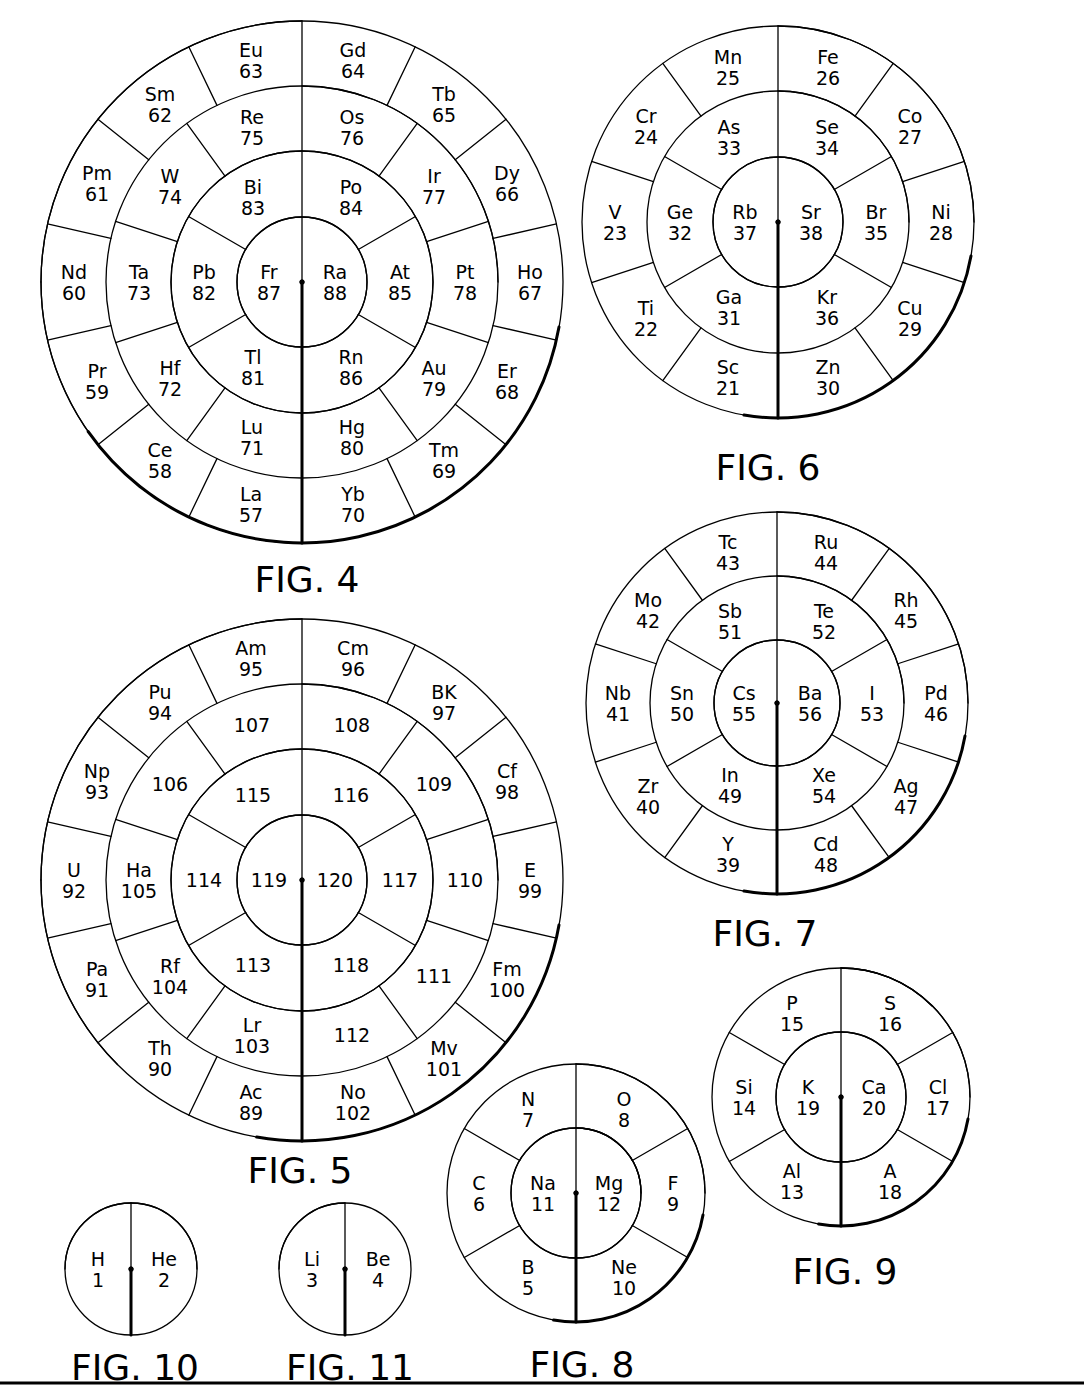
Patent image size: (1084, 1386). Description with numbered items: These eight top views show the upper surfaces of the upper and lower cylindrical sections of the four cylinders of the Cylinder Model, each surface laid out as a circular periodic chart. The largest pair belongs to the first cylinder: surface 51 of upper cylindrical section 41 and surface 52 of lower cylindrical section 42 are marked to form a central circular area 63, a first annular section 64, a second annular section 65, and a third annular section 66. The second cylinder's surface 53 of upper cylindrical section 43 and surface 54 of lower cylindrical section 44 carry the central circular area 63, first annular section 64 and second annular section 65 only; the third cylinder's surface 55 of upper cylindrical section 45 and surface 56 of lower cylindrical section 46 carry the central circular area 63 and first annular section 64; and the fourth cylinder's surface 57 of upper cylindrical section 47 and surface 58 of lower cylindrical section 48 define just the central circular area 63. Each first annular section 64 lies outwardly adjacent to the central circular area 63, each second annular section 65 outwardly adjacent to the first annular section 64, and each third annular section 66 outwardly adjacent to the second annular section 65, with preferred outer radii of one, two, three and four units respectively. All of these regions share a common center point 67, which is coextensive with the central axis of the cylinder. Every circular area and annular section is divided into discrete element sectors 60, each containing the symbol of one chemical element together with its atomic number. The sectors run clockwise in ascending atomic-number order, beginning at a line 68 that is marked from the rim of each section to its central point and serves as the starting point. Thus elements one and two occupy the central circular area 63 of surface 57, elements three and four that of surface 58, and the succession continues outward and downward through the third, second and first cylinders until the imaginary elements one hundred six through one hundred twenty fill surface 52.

In FIG. 4, the upper cylindrical section 41 is at (493, 412).
In FIG. 5, the upper cylindrical section 41 is at (383, 1132).
In FIG. 4, the lower cylindrical section 42 is at (400, 530).
In FIG. 5, the lower cylindrical section 42 is at (574, 870).
In FIG. 6, the upper cylindrical section 43 is at (934, 107).
In FIG. 7, the lower cylindrical section 44 is at (916, 565).
In FIG. 8, the upper cylindrical section 45 is at (675, 1227).
In FIG. 9, the lower cylindrical section 46 is at (943, 1123).
In FIG. 10, the upper cylindrical section 47 is at (185, 1228).
In FIG. 11, the lower cylindrical section 48 is at (380, 1217).
In FIG. 4, the surface 51 is at (473, 102).
In FIG. 5, the surface 52 is at (500, 715).
In FIG. 6, the surface 53 is at (884, 96).
In FIG. 7, the surface 54 is at (890, 569).
In FIG. 8, the surface 55 is at (640, 1105).
In FIG. 9, the surface 56 is at (908, 1028).
In FIG. 10, the surface 57 is at (107, 1225).
In FIG. 11, the surface 58 is at (322, 1225).
In FIG. 4, the element sector 60 is at (182, 70).
In FIG. 4, the central circular area 63 is at (282, 243).
In FIG. 5, the central circular area 63 is at (293, 838).
In FIG. 6, the central circular area 63 is at (807, 258).
In FIG. 7, the central circular area 63 is at (799, 744).
In FIG. 8, the central circular area 63 is at (563, 1160).
In FIG. 9, the central circular area 63 is at (848, 1060).
In FIG. 10, the central circular area 63 is at (147, 1223).
In FIG. 4, the first annular section 64 is at (200, 315).
In FIG. 5, the first annular section 64 is at (187, 903).
In FIG. 6, the first annular section 64 is at (864, 195).
In FIG. 7, the first annular section 64 is at (877, 668).
In FIG. 8, the first annular section 64 is at (598, 1068).
In FIG. 9, the first annular section 64 is at (890, 975).
In FIG. 4, the second annular section 65 is at (133, 320).
In FIG. 5, the second annular section 65 is at (167, 765).
In FIG. 6, the second annular section 65 is at (844, 55).
In FIG. 7, the second annular section 65 is at (797, 536).
In FIG. 4, the third annular section 66 is at (173, 495).
In FIG. 5, the third annular section 66 is at (102, 1015).
In FIG. 4, the common center point 67 is at (302, 283).
In FIG. 5, the common center point 67 is at (302, 880).
In FIG. 6, the common center point 67 is at (778, 222).
In FIG. 7, the common center point 67 is at (777, 703).
In FIG. 8, the common center point 67 is at (576, 1193).
In FIG. 9, the common center point 67 is at (841, 1097).
In FIG. 10, the common center point 67 is at (131, 1270).
In FIG. 11, the common center point 67 is at (345, 1269).
In FIG. 4, the line 68 is at (303, 523).
In FIG. 5, the line 68 is at (305, 1123).
In FIG. 6, the line 68 is at (776, 377).
In FIG. 7, the line 68 is at (775, 853).
In FIG. 8, the line 68 is at (575, 1287).
In FIG. 9, the line 68 is at (842, 1187).